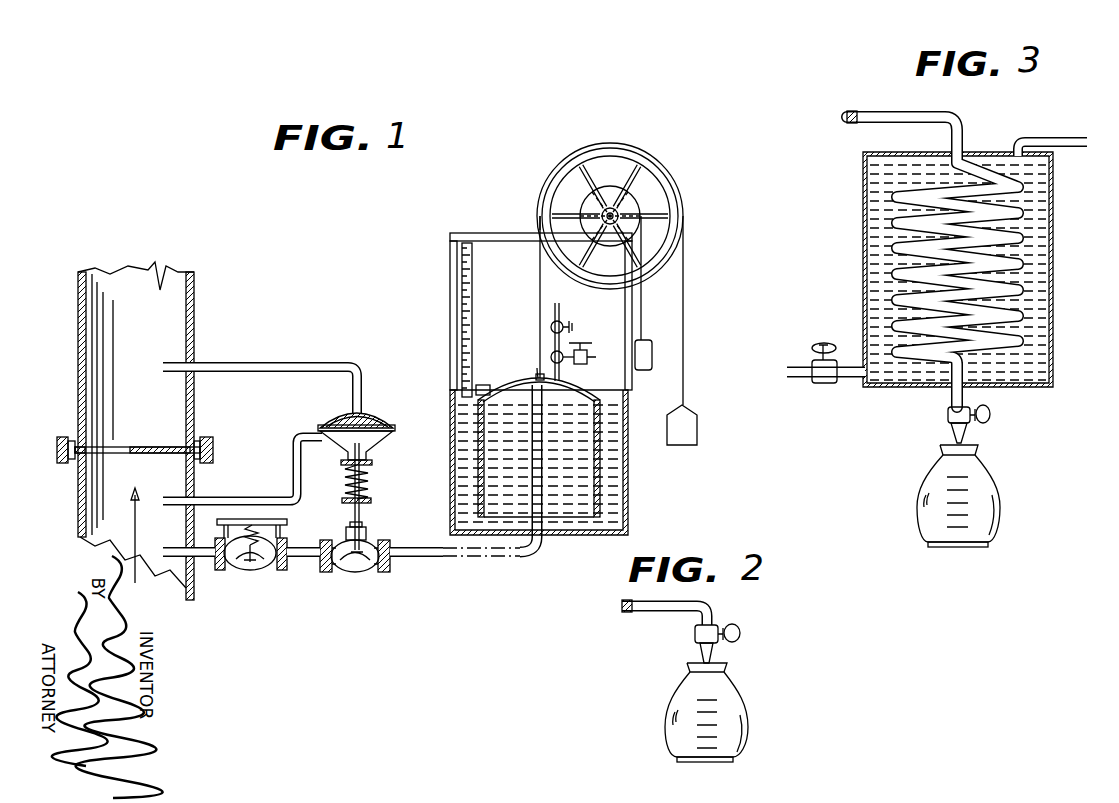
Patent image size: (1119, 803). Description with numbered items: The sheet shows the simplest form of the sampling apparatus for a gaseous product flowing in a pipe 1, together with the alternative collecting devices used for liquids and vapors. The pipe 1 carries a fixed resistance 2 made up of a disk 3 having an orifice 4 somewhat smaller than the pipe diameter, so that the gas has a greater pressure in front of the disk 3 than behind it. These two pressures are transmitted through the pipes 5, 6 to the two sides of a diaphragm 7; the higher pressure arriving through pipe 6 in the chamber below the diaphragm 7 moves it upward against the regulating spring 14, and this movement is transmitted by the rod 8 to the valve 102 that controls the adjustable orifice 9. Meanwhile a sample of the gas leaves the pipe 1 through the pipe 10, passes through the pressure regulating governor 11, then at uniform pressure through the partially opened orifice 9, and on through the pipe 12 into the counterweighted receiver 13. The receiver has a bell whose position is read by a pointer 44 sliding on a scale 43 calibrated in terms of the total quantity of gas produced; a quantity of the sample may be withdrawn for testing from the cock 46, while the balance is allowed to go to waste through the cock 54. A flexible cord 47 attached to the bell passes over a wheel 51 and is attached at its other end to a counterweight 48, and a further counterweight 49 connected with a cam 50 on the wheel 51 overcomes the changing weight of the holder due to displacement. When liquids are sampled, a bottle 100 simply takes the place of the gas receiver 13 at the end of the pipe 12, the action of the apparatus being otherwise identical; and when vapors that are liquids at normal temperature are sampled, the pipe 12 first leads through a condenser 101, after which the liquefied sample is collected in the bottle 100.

In FIG. 1, the pipe 1 is at (78, 300).
In FIG. 1, the fixed resistance 2 is at (57, 447).
In FIG. 1, the disk 3 is at (187, 456).
In FIG. 1, the orifice 4 is at (148, 447).
In FIG. 1, the pipe 5 is at (262, 366).
In FIG. 1, the pipe 6 is at (256, 503).
In FIG. 1, the diaphragm 7 is at (350, 420).
In FIG. 1, the rod 8 is at (362, 508).
In FIG. 1, the adjustable orifice 9 is at (352, 573).
In FIG. 1, the pipe 10 is at (199, 560).
In FIG. 1, the regulating governor 11 is at (243, 574).
In FIG. 1, the pipe 12 is at (432, 559).
In FIG. 2, the pipe 12 is at (651, 612).
In FIG. 3, the pipe 12 is at (909, 112).
In FIG. 1, the counterweighted receiver 13 is at (612, 476).
In FIG. 1, the regulating spring 14 is at (368, 481).
In FIG. 1, the scale 43 is at (473, 318).
In FIG. 1, the pointer 44 is at (485, 385).
In FIG. 1, the cock 46 is at (583, 352).
In FIG. 1, the flexible cord 47 is at (540, 291).
In FIG. 1, the counterweight 48 is at (697, 420).
In FIG. 1, the counterweight 49 is at (653, 350).
In FIG. 1, the cam 50 is at (636, 200).
In FIG. 1, the wheel 51 is at (655, 180).
In FIG. 1, the cock 54 is at (563, 326).
In FIG. 2, the bottle 100 is at (737, 690).
In FIG. 3, the bottle 100 is at (986, 478).
In FIG. 3, the condenser 101 is at (1053, 191).
In FIG. 1, the valve 102 is at (372, 540).